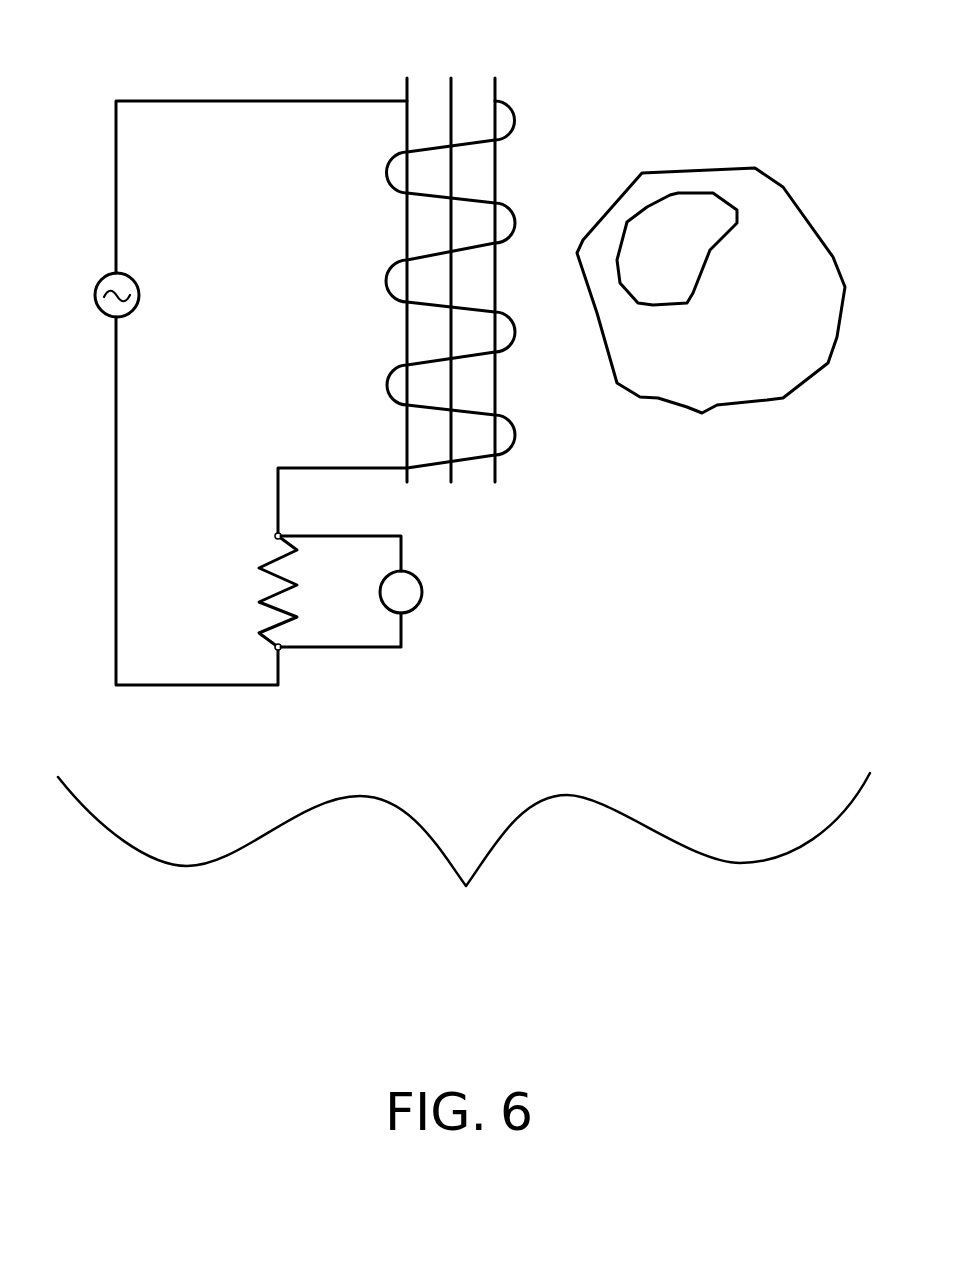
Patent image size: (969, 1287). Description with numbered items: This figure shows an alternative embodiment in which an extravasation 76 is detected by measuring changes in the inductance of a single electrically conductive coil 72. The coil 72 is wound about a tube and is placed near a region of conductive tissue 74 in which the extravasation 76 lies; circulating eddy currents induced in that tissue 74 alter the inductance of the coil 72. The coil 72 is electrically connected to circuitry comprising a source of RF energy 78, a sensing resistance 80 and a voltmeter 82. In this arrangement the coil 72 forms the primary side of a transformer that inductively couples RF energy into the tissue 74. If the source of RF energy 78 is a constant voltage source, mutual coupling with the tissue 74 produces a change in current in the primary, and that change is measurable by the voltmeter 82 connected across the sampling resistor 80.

The coil 72 is at (513, 108).
The region of conductive tissue 74 is at (710, 377).
The extravasation 76 is at (680, 282).
The source of RF energy 78 is at (139, 295).
The sensing resistance 80 is at (263, 583).
The voltmeter 82 is at (422, 592).